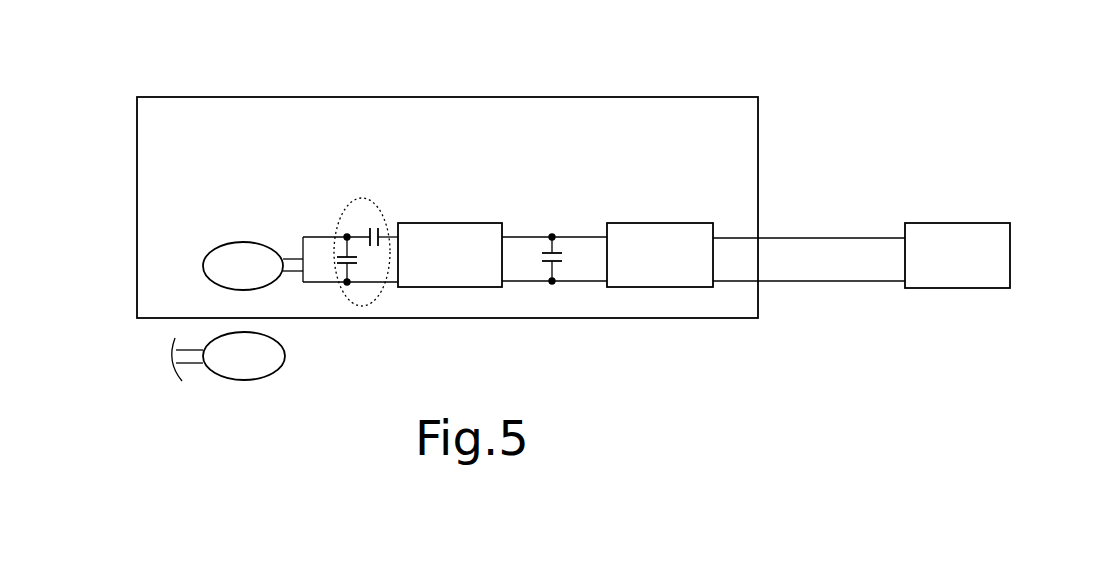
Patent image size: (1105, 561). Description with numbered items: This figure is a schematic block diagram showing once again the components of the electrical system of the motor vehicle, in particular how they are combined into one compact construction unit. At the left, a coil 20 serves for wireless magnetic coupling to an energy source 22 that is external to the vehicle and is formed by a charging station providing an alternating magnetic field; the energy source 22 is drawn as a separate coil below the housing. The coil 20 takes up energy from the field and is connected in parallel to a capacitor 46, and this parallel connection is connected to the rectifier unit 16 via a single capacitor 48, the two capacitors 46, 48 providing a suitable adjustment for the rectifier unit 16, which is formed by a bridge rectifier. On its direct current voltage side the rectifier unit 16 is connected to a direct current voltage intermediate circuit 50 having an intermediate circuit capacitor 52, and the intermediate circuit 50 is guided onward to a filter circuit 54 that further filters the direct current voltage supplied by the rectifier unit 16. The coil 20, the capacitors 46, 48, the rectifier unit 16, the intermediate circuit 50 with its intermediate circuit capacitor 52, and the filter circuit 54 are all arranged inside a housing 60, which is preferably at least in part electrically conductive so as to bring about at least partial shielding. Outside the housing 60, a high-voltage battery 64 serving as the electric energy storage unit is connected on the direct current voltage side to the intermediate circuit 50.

The housing 60 is at (307, 97).
The coil 20 is at (203, 266).
The energy source 22 is at (228, 380).
The capacitor 46 is at (352, 268).
The single capacitor 48 is at (383, 243).
The rectifier unit 16 is at (463, 222).
The direct current voltage intermediate circuit 50 is at (568, 223).
The intermediate circuit capacitor 52 is at (557, 264).
The filter circuit 54 is at (660, 223).
The high-voltage battery 64 is at (967, 223).